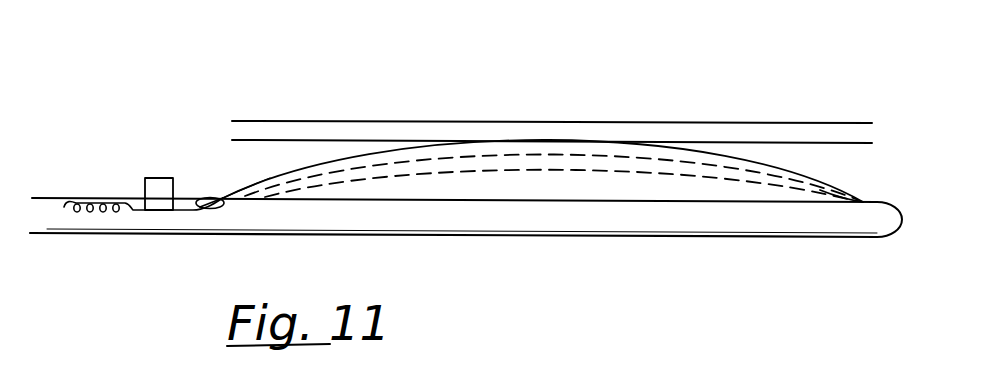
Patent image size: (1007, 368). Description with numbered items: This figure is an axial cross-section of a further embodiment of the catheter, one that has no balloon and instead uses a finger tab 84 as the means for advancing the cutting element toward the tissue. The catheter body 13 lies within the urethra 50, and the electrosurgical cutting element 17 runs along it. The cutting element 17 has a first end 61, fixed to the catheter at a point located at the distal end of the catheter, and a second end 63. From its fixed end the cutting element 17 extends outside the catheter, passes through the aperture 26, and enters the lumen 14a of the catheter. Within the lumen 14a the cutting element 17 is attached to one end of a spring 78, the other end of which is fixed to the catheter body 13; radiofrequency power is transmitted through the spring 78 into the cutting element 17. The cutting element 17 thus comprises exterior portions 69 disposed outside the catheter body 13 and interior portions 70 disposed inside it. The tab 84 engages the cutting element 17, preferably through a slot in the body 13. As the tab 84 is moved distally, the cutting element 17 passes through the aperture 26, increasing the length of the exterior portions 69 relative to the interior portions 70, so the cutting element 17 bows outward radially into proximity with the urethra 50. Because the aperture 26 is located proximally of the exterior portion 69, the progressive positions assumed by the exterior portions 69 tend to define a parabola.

The catheter body 13 is at (878, 230).
The lumen 14a is at (448, 223).
The electrosurgical cutting element 17 is at (365, 153).
The aperture 26 is at (227, 207).
The urethra 50 is at (745, 125).
The first end 61 is at (847, 183).
The second end 63 is at (232, 183).
The exterior portions 69 is at (287, 164).
The interior portions 70 is at (153, 215).
The spring 78 is at (78, 212).
The finger tab 84 is at (157, 180).